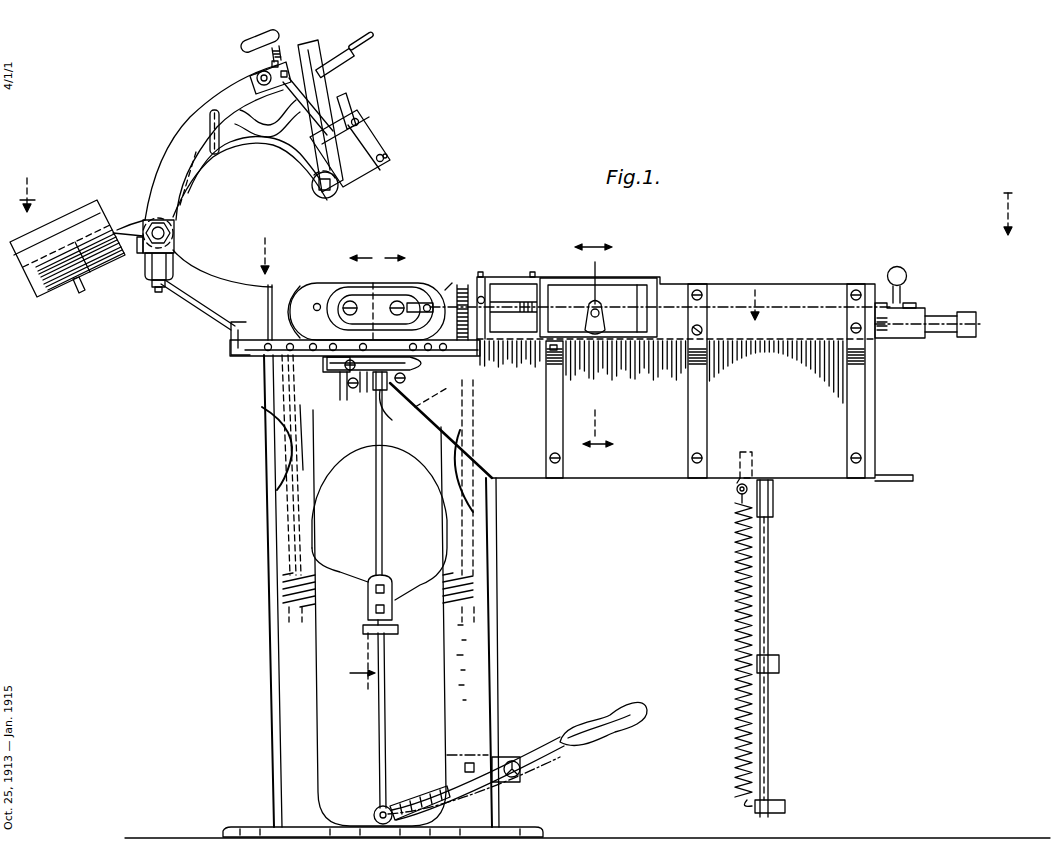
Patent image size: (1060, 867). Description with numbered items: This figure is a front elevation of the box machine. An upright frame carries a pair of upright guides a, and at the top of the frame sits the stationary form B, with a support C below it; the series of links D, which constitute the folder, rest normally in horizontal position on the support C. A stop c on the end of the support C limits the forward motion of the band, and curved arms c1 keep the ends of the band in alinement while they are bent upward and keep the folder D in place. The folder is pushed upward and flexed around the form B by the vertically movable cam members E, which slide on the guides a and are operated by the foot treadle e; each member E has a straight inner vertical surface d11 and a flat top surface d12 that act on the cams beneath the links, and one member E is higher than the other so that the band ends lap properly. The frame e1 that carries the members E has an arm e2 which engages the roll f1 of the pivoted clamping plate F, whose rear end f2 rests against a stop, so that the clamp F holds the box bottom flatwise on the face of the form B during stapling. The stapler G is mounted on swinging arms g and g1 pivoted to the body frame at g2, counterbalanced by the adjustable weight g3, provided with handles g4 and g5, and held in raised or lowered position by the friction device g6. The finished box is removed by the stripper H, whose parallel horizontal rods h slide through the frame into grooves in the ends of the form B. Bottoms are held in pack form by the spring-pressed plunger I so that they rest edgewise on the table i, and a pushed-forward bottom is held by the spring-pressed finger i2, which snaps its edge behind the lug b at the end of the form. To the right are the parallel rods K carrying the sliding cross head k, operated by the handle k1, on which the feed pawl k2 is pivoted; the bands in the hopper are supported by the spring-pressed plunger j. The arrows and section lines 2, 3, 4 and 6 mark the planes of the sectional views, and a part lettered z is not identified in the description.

The swinging arm g is at (195, 116).
The swinging arm g1 is at (236, 150).
The pivot g2 is at (167, 230).
The adjustable weight g3 is at (37, 250).
The handle g4 is at (258, 57).
The handle g5 is at (373, 37).
The friction device g6 is at (148, 273).
The stapler G is at (350, 147).
The rods h is at (318, 287).
The lug b is at (428, 286).
The curved arms c1 is at (277, 307).
The form B is at (383, 295).
The folder D is at (255, 342).
The stop c is at (230, 337).
The support C is at (258, 357).
The flat top surfaces d12 is at (258, 420).
The upright guides a is at (282, 400).
The clamping plate F is at (337, 370).
The roll f1 is at (360, 387).
The rear end of clamping plate f2 is at (385, 392).
The spring-pressed finger i2 is at (413, 312).
The cam members E is at (252, 423).
The straight inner vertical surfaces d11 is at (303, 460).
The arm e2 is at (376, 520).
The frame e1 is at (350, 582).
The stripper H is at (477, 700).
The foot treadle e is at (535, 755).
The spring-pressed plunger I is at (590, 312).
The table i is at (618, 343).
The rail z is at (652, 317).
The feed pawl k2 is at (876, 300).
The handle k1 is at (898, 268).
The parallel rods K is at (941, 320).
The sliding cross head k is at (905, 333).
The spring-pressed plunger j is at (771, 502).
The section line 2— 2 is at (518, 209).
The section line 3— 3 is at (594, 346).
The section line 4— 4 is at (377, 469).
The section line 6— 6 is at (509, 279).